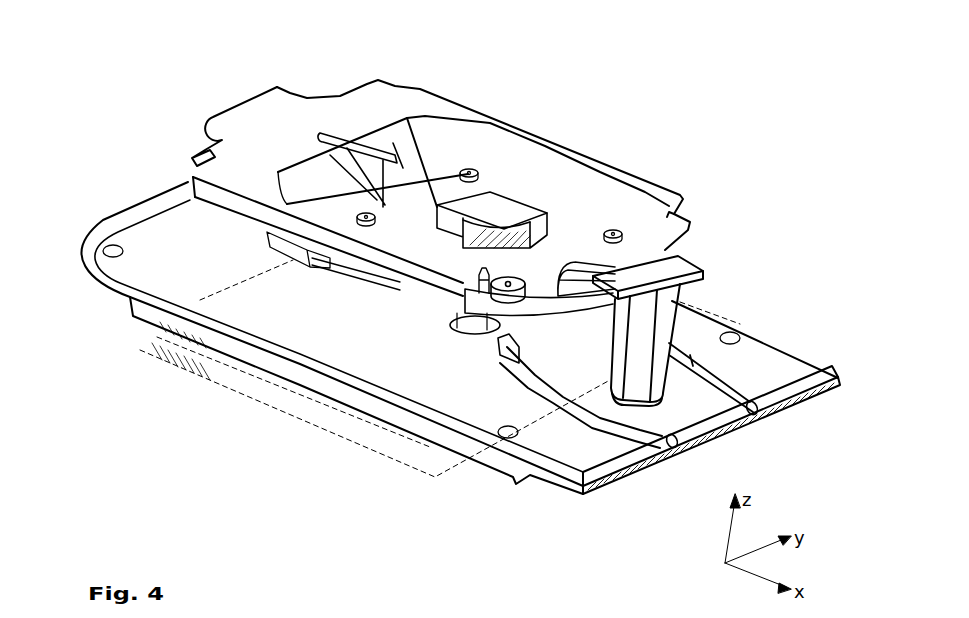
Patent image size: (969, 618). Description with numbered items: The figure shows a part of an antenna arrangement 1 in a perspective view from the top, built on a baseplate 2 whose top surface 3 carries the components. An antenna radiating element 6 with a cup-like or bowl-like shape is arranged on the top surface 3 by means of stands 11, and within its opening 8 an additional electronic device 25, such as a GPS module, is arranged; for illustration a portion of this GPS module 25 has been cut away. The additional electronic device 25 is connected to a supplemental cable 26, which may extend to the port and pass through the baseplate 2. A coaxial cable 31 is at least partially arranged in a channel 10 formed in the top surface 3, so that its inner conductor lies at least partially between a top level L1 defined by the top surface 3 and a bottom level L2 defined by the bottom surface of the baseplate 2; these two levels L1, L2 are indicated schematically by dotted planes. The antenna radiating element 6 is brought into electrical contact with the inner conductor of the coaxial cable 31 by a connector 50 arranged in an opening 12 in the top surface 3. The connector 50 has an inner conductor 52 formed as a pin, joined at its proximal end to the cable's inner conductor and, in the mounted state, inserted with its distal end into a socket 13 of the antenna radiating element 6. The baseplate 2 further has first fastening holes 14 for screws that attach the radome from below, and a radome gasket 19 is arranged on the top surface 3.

The antenna arrangement 1 is at (130, 63).
The baseplate 2 is at (603, 492).
The top surface 3 is at (185, 282).
The antenna radiating element 6 is at (307, 130).
The opening 8 is at (442, 143).
The channel 10 is at (757, 418).
The stand 11 is at (188, 160).
The opening 12 is at (500, 342).
The socket 13 is at (490, 283).
The first fastening hole 14 is at (111, 245).
The radome gasket 19 is at (333, 348).
The additional electronic device 25 is at (482, 208).
The supplemental cable 26 is at (718, 380).
The coaxial cable 31 is at (643, 433).
The connector 50 is at (443, 333).
The inner conductor 52 is at (472, 280).
The top level L1 is at (147, 325).
The bottom level L2 is at (138, 352).